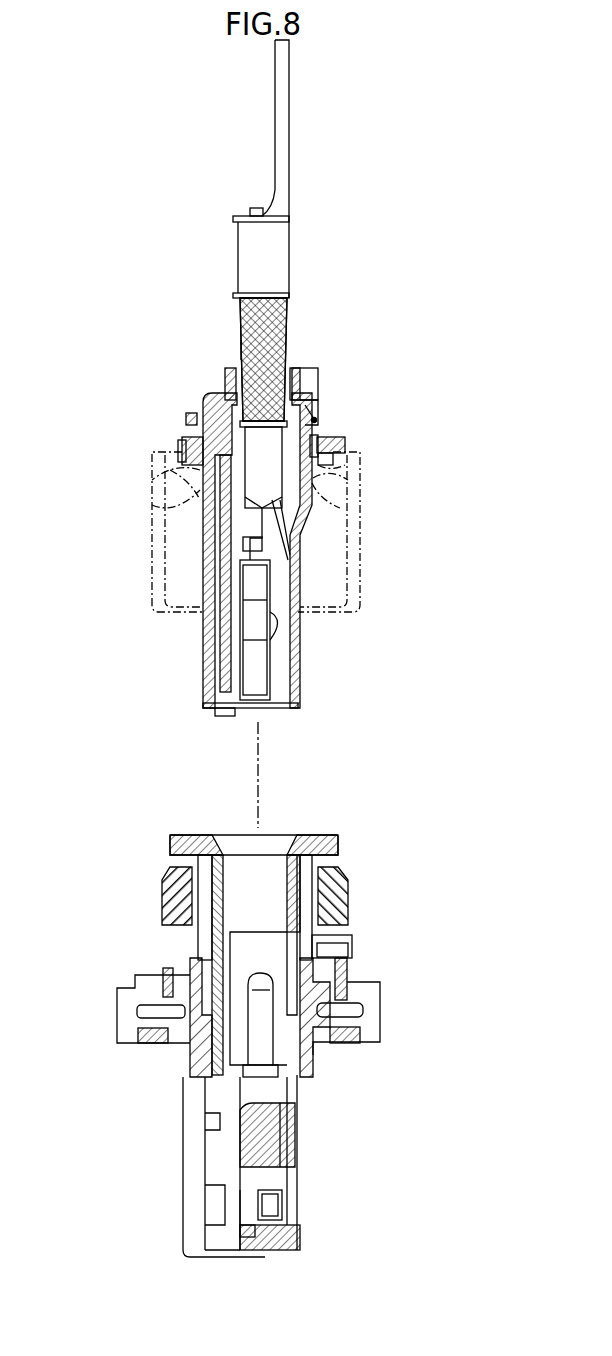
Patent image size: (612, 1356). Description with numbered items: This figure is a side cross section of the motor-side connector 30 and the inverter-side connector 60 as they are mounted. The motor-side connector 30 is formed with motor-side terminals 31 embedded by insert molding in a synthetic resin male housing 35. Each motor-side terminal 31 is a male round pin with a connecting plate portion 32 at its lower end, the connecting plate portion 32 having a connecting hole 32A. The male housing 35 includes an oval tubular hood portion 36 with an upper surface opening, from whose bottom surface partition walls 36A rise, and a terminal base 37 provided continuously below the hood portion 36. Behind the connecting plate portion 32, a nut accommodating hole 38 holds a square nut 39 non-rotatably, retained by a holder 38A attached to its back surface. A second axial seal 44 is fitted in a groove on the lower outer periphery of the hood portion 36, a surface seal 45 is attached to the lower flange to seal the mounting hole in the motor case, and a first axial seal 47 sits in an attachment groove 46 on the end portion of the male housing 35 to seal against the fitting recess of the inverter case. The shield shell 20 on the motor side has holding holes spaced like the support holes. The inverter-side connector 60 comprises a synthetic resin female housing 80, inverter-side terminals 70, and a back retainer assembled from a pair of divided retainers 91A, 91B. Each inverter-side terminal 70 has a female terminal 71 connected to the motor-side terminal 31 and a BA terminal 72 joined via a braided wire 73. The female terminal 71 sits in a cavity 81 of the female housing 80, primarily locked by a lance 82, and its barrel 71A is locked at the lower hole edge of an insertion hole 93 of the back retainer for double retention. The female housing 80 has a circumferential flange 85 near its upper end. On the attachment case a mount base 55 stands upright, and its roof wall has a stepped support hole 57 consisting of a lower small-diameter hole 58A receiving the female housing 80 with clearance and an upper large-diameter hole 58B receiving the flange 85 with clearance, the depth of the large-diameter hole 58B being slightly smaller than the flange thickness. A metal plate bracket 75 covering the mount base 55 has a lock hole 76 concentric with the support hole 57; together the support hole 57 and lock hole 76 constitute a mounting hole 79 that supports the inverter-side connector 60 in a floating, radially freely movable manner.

The shield shell 20 is at (382, 1008).
The motor-side connector 30 is at (160, 1098).
The motor-side terminal 31 is at (265, 1003).
The connecting plate portion 32 is at (245, 1167).
The connecting hole 32A is at (243, 1198).
The male housing 35 is at (190, 1053).
The hood portion 36 is at (343, 912).
The partition wall 36A is at (250, 957).
The terminal base 37 is at (272, 1160).
The nut accommodating hole 38 is at (283, 1232).
The holder 38A is at (297, 1185).
The square nut 39 is at (242, 1237).
The second axial seal 44 is at (165, 975).
The surface seal 45 is at (350, 1048).
The attachment groove 46 is at (345, 878).
The first axial seal 47 is at (175, 880).
The mount base 55 is at (360, 543).
The support hole 57 is at (340, 508).
The small-diameter hole 58A is at (198, 483).
The large-diameter hole 58B is at (182, 443).
The inverter-side connector 60 is at (185, 662).
The inverter-side terminal 70 is at (290, 268).
The female terminal 71 is at (245, 622).
The barrel 71A is at (260, 482).
The BA terminal 72 is at (289, 145).
The braided wire 73 is at (238, 310).
The bracket 75 is at (345, 442).
The lock hole 76 is at (320, 420).
The mounting hole 79 is at (345, 465).
The female housing 80 is at (300, 672).
The cavity 81 is at (283, 640).
The lance 82 is at (250, 560).
The flange 85 is at (200, 473).
The divided retainer 91A is at (225, 380).
The divided retainer 91B is at (318, 380).
The insertion hole 93 is at (240, 352).